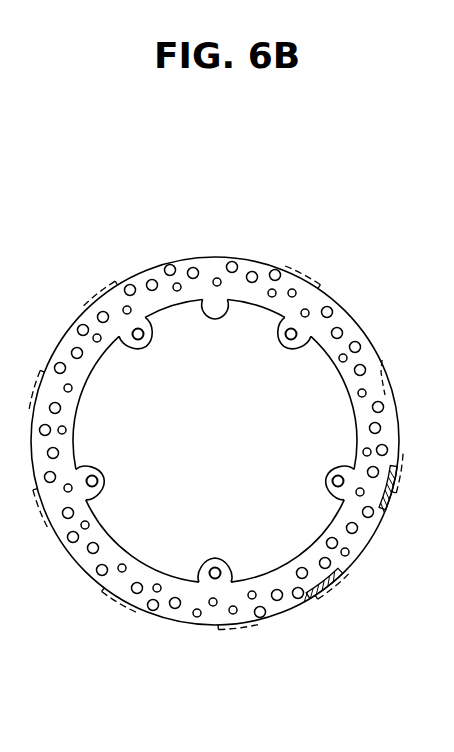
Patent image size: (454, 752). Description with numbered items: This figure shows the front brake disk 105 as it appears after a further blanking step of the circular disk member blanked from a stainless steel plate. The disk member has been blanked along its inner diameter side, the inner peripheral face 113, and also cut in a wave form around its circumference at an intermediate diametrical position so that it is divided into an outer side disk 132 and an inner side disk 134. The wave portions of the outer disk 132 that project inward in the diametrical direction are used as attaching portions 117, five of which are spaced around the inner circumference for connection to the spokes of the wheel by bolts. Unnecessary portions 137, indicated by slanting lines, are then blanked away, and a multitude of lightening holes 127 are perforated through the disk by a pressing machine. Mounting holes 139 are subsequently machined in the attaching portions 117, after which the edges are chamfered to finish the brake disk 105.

The brake disk 105 is at (352, 288).
The inner peripheral face 113 is at (217, 302).
The attaching portion 117 is at (98, 488).
The lightening hole 127 is at (262, 613).
The disk 132 is at (381, 359).
The disk 134 is at (2, 258).
The unnecessary portion 137 is at (389, 494).
The mounting hole 139 is at (216, 576).